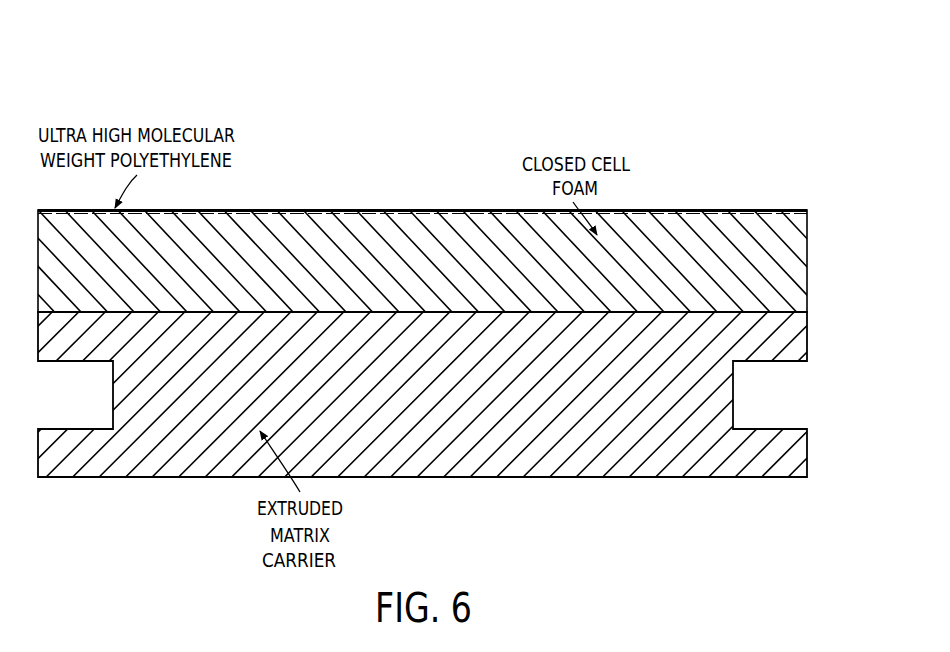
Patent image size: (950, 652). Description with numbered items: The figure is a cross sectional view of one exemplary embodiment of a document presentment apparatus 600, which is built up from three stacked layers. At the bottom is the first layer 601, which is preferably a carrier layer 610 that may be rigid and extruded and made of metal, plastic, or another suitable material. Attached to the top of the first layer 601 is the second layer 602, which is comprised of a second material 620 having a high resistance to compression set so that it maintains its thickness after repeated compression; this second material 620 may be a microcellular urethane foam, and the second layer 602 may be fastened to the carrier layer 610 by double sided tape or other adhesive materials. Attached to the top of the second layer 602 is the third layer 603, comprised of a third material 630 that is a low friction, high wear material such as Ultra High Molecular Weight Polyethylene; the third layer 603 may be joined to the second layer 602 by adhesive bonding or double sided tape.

The document presentment apparatus 600 is at (716, 85).
The first layer 601 is at (381, 478).
The second layer 602 is at (808, 260).
The third layer 603 is at (664, 210).
The carrier layer 610 is at (221, 477).
The second material 620 is at (745, 225).
The third material 630 is at (268, 209).